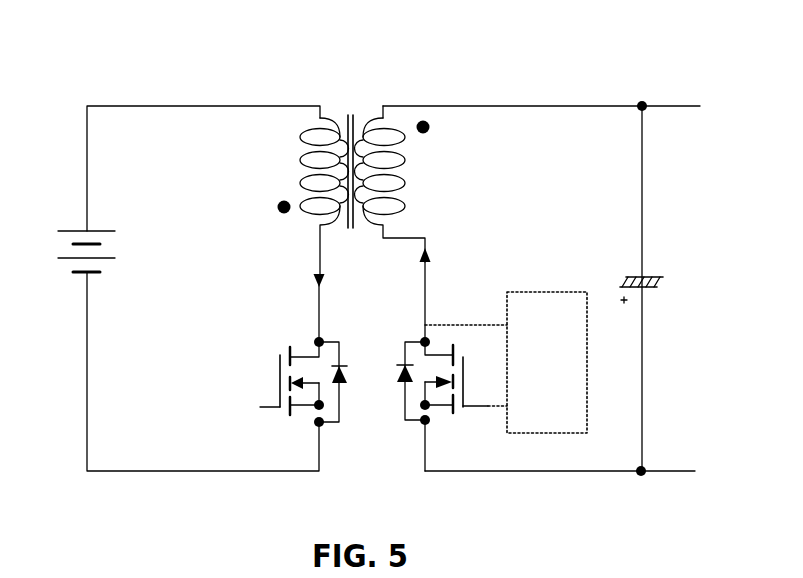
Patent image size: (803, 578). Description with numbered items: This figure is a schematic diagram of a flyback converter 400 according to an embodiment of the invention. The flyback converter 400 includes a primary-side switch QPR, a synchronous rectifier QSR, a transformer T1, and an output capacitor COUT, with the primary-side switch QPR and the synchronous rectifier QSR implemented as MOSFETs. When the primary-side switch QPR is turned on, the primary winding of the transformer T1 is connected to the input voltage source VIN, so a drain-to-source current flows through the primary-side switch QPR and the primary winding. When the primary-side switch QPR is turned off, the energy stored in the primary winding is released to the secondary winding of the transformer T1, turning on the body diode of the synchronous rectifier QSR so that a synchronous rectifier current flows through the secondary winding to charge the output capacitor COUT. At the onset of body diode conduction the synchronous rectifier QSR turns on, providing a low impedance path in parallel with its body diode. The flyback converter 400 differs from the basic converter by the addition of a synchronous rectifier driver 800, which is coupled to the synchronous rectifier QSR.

The flyback converter 400 is at (244, 62).
The synchronous rectifier (SR) driver 800 is at (520, 292).
The transformer T1 is at (354, 170).
The primary-side switch QPR is at (298, 374).
The synchronous rectifier QSR is at (424, 393).
The input voltage source VIN is at (61, 251).
The output capacitor COUT is at (672, 288).